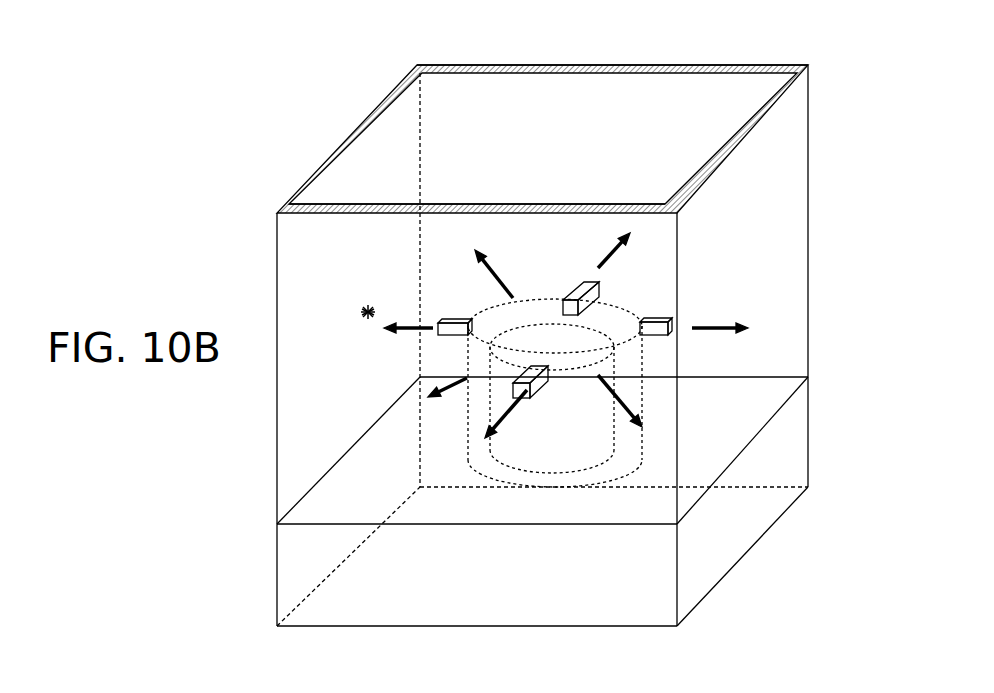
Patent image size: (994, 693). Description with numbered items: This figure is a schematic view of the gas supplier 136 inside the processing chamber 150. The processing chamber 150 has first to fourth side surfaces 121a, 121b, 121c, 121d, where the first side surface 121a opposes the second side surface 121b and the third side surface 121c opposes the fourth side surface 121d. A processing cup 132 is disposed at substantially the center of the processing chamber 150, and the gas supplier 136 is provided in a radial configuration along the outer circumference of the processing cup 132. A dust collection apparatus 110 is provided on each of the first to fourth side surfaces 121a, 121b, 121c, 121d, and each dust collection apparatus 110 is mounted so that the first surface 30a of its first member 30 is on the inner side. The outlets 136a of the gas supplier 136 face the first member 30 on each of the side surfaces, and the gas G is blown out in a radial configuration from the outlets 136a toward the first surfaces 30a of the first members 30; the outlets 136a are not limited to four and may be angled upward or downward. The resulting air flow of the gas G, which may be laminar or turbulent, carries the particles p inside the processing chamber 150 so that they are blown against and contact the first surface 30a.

The first member 30 is at (508, 103).
The first surface 30a is at (542, 102).
The dust collection apparatus 110 is at (370, 137).
The first side surface 121a is at (353, 135).
The second side surface 121b is at (778, 172).
The third side surface 121c is at (632, 65).
The fourth side surface 121d is at (358, 492).
The processing cup 132 is at (612, 452).
The gas supplier 136 is at (545, 278).
The outlets 136a is at (437, 320).
The processing chamber 150 is at (745, 65).
The gas G is at (408, 322).
The particles p is at (362, 310).